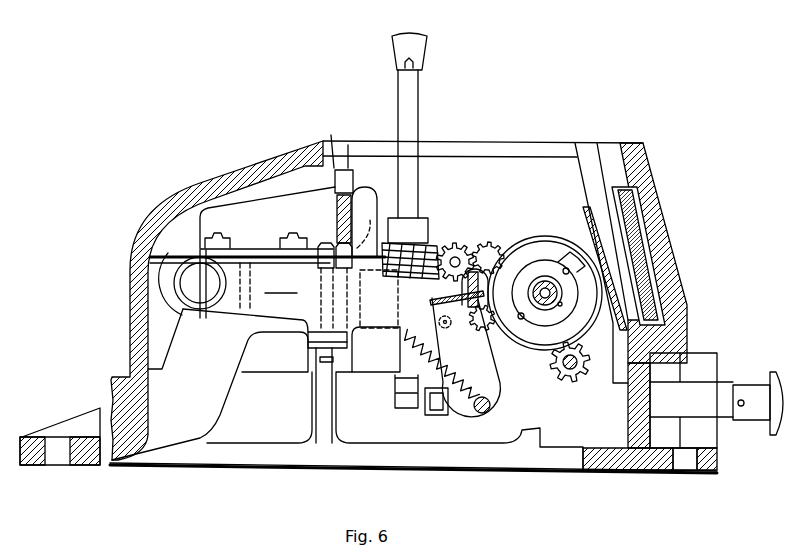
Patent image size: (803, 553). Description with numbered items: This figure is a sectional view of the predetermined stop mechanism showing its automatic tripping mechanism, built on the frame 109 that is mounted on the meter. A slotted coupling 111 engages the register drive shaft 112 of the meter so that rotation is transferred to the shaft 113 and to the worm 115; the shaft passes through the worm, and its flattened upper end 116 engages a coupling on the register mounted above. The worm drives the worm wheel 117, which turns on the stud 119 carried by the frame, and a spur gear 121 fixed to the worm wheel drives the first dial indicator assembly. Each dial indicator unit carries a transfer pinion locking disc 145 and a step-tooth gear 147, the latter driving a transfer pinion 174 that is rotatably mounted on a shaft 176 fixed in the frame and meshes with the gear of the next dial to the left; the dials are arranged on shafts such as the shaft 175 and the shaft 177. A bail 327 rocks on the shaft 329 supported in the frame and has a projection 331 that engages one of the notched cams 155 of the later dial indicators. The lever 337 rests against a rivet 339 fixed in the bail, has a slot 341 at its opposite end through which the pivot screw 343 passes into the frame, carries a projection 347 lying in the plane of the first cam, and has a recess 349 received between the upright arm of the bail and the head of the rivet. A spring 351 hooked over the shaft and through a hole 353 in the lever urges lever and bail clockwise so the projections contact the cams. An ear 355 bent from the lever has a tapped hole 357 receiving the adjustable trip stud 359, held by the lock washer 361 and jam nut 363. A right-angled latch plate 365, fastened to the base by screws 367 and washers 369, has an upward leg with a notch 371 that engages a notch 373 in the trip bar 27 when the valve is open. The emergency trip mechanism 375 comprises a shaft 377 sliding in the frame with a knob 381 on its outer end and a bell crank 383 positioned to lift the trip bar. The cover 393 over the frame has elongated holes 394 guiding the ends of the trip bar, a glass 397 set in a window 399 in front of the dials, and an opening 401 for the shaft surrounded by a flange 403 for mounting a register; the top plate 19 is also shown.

The top plate 19 is at (526, 139).
The trip bar 27 is at (354, 178).
The frame 109 is at (276, 466).
The slotted coupling 111 is at (393, 386).
The register drive shaft 112 is at (396, 403).
The shaft 113 is at (419, 91).
The worm 115 is at (436, 240).
The upper end 116 is at (424, 41).
The worm wheel 117 is at (468, 243).
The stud 119 is at (470, 246).
The spur gear 121 is at (490, 243).
The transfer pinion locking disc 145 is at (547, 245).
The step-tooth gear 147 is at (535, 330).
The cam 155 is at (537, 237).
The transfer pinion 174 is at (582, 381).
The shaft 175 is at (530, 293).
The shaft 176 is at (570, 400).
The shaft 177 is at (560, 306).
The bail 327 is at (438, 321).
The shaft 329 is at (491, 402).
The projection 331 is at (494, 289).
The lever 337 is at (188, 314).
The rivet 339 is at (434, 301).
The slot 341 is at (168, 262).
The pivot screw 343 is at (205, 312).
The projection 347 is at (472, 322).
The recess 349 is at (455, 298).
The spring 351 is at (404, 344).
The hole 353 is at (396, 312).
The ear 355 is at (305, 338).
The tapped hole 357 is at (330, 330).
The adjustable trip stud 359 is at (303, 243).
The lock washer 361 is at (305, 345).
The jam nut 363 is at (307, 372).
The right-angled latch plate 365 is at (285, 205).
The screws 367 is at (235, 243).
The washers 369 is at (232, 246).
The notch 371 is at (337, 178).
The notch 373 is at (369, 222).
The emergency trip mechanism 375 is at (723, 386).
The shaft 377 is at (715, 420).
The knob 381 is at (773, 440).
The bell crank 383 is at (438, 413).
The cover 393 is at (133, 270).
The elongated holes 394 is at (348, 145).
The glass 397 is at (650, 229).
The window 399 is at (642, 206).
The opening 401 is at (331, 135).
The flange 403 is at (646, 160).